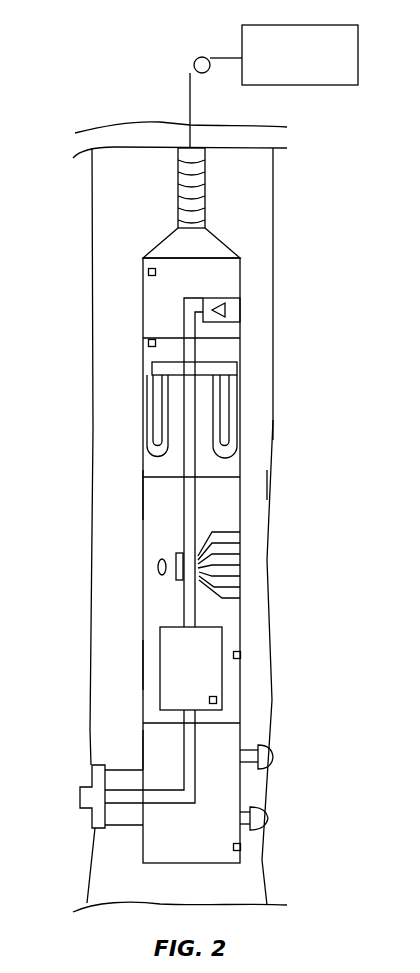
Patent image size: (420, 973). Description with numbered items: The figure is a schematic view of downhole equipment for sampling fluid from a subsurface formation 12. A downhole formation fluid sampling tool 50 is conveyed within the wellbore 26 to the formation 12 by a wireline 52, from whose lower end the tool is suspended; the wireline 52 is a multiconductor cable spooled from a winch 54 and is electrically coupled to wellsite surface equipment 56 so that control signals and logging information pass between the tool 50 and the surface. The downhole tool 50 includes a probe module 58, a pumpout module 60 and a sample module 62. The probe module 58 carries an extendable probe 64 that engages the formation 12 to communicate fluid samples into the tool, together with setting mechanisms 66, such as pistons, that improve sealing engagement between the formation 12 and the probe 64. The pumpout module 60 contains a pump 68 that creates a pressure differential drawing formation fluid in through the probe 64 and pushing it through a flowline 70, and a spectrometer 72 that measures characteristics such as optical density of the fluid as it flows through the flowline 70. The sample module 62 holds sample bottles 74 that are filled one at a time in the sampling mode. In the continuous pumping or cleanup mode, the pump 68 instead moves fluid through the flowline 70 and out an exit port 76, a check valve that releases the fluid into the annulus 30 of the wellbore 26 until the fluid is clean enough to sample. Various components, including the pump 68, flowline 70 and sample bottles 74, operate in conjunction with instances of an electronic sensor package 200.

The formation 12 is at (291, 316).
The wellbore 26 is at (278, 443).
The annulus 30 is at (258, 489).
The downhole formation fluid sampling tool 50 is at (108, 500).
The wireline 52 is at (178, 188).
The winch 54 is at (208, 72).
The wellsite surface equipment 56 is at (300, 85).
The probe module 58 is at (142, 748).
The pumpout module 60 is at (143, 665).
The sample module 62 is at (143, 465).
The probe 64 is at (102, 750).
The setting mechanisms 66 is at (273, 755).
The pump 68 is at (182, 683).
The flowline 70 is at (197, 520).
The spectrometer 72 is at (248, 564).
The sample bottles 74 is at (142, 413).
The exit port 76 is at (241, 310).
The electronic sensor package 200 is at (148, 273).